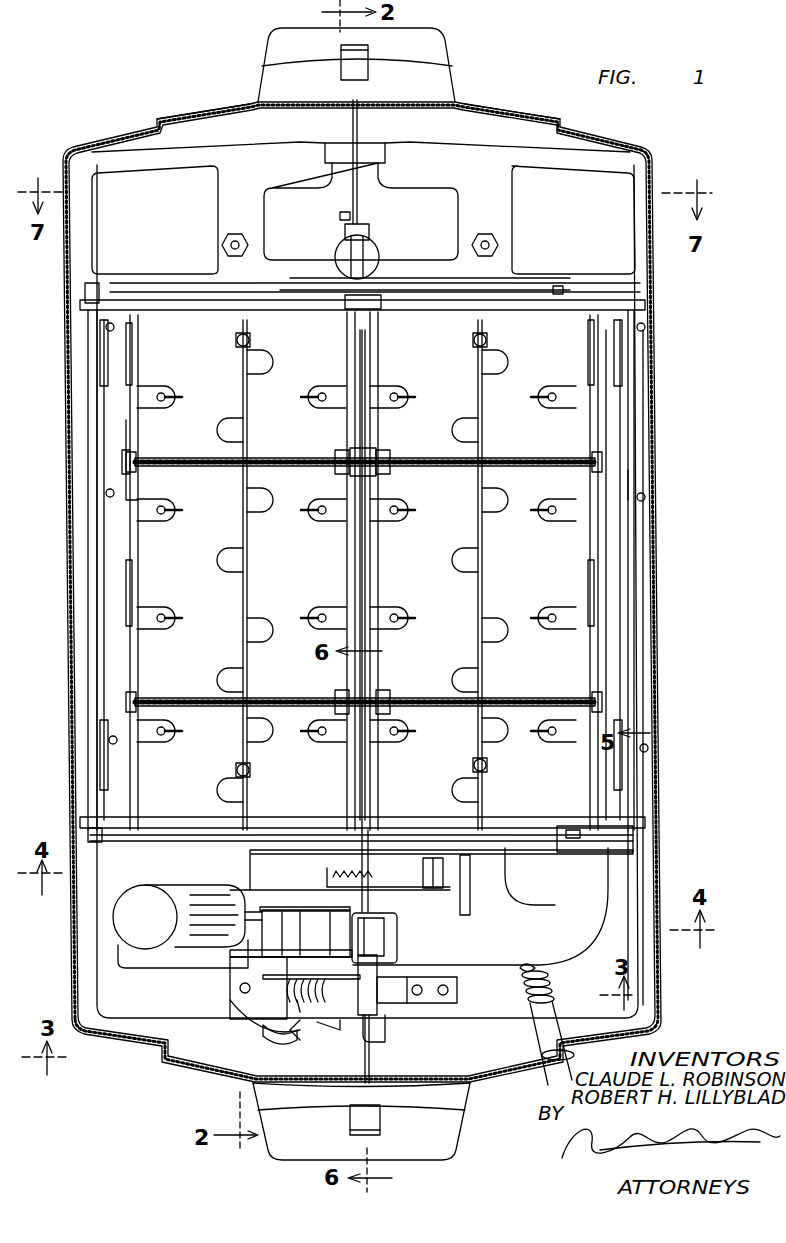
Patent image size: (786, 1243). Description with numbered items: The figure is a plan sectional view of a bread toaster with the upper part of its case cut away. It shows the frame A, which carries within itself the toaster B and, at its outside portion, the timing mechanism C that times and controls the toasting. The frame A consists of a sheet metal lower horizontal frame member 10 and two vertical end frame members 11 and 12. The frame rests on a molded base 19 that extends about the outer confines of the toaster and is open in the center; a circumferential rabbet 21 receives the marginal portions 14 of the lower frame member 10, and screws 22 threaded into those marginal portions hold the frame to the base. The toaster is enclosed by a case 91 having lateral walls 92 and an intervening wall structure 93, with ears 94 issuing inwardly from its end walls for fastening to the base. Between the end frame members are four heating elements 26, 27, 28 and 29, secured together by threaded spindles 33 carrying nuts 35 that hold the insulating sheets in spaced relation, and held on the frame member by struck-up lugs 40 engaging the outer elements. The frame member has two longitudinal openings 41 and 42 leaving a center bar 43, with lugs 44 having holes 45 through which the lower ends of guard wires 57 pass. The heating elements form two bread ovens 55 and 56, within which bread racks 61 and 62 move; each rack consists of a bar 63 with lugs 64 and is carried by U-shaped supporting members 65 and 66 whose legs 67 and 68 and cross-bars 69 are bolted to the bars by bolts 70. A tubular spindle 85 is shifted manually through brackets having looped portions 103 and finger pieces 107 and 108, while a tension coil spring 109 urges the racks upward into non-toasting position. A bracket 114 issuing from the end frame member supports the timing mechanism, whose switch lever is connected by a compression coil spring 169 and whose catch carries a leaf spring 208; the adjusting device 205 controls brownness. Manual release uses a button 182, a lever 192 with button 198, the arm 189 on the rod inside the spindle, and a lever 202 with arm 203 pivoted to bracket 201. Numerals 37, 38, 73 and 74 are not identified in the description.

The lower horizontal frame member 10 is at (630, 480).
The vertical end frame member 11 is at (566, 300).
The vertical end frame member 12 is at (222, 838).
The marginal portions 14 is at (88, 600).
The base 19 is at (112, 136).
The rabbet 21 is at (636, 870).
The screws 22 is at (106, 327).
The heating element 26 is at (132, 345).
The heating element 27 is at (347, 356).
The heating element 28 is at (370, 352).
The heating element 29 is at (590, 338).
The threaded spindles 33 is at (195, 448).
The nuts 35 is at (330, 456).
The bracket 37 is at (132, 452).
The spacer nut 38 is at (368, 452).
The lugs 40 is at (100, 362).
The longitudinal opening 41 is at (200, 362).
The longitudinal opening 42 is at (514, 402).
The center bar 43 is at (370, 620).
The lugs 44 is at (160, 388).
The holes 45 is at (560, 388).
The bread oven 55 is at (200, 655).
The bread oven 56 is at (488, 604).
The guard wires 57 is at (165, 610).
The bread rack 61 is at (247, 600).
The bread rack 62 is at (485, 540).
The bar 63 is at (248, 410).
The lugs 64 is at (262, 362).
The U-shaped supporting member 65 is at (498, 838).
The U-shaped supporting member 66 is at (230, 296).
The leg 67 is at (245, 790).
The leg 68 is at (466, 790).
The cross-bars 69 is at (285, 840).
The bolts 70 is at (488, 340).
The side rail 73 is at (130, 676).
The side rail 74 is at (620, 442).
The spindle 85 is at (362, 396).
The case 91 is at (188, 115).
The lateral walls 92 is at (100, 640).
The wall structure 93 is at (482, 114).
The ears 94 is at (378, 1025).
The looped portions 103 is at (366, 1002).
The finger piece 107 is at (302, 1143).
The finger piece 108 is at (268, 48).
The tension coil spring 109 is at (379, 248).
The bracket 114 is at (590, 945).
The compression coil spring 169 is at (290, 992).
The button 182 is at (360, 72).
The arm 189 is at (362, 1013).
The lever 192 is at (372, 1064).
The button 198 is at (372, 1128).
The bracket 201 is at (245, 978).
The lever 202 is at (273, 1013).
The arm 203 is at (293, 997).
The adjusting device 205 is at (520, 985).
The leaf spring 208 is at (375, 945).
The frame A is at (645, 812).
The toaster B is at (612, 660).
The timing mechanism C is at (397, 940).